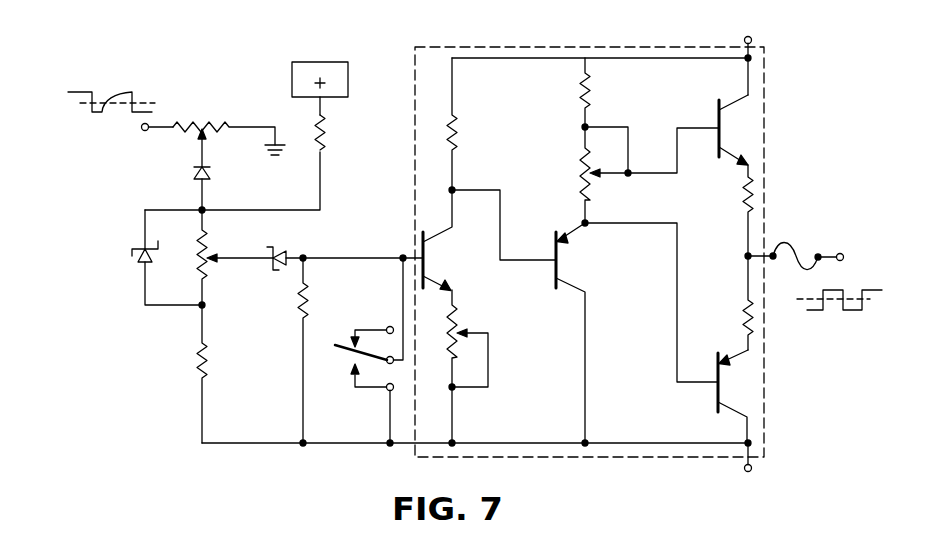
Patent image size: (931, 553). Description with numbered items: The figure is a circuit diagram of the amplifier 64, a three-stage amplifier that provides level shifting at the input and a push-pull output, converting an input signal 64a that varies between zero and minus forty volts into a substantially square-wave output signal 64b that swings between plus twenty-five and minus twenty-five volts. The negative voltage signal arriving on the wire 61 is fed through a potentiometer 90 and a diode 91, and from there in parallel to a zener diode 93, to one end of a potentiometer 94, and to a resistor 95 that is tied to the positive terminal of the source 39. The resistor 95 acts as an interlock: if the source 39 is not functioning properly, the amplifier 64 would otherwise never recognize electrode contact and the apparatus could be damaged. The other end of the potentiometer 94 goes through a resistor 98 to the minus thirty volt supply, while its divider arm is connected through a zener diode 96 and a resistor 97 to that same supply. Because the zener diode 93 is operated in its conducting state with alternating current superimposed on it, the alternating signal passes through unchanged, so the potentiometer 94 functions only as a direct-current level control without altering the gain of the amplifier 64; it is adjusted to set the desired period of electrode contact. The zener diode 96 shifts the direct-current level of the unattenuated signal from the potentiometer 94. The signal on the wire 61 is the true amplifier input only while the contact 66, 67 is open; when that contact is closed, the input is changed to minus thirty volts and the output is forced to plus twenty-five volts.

The source 39 is at (323, 62).
The wire 61 is at (157, 131).
The amplifier 64 is at (588, 47).
The input signal 64a is at (128, 92).
The output signal 64b is at (853, 313).
The contact 66 is at (343, 348).
The contact 67 is at (358, 327).
The potentiometer 90 is at (202, 121).
The diode 91 is at (212, 177).
The zener diode 93 is at (139, 263).
The potentiometer 94 is at (209, 277).
The resistor 95 is at (328, 139).
The zener diode 96 is at (284, 253).
The resistor 97 is at (309, 299).
The resistor 98 is at (207, 354).